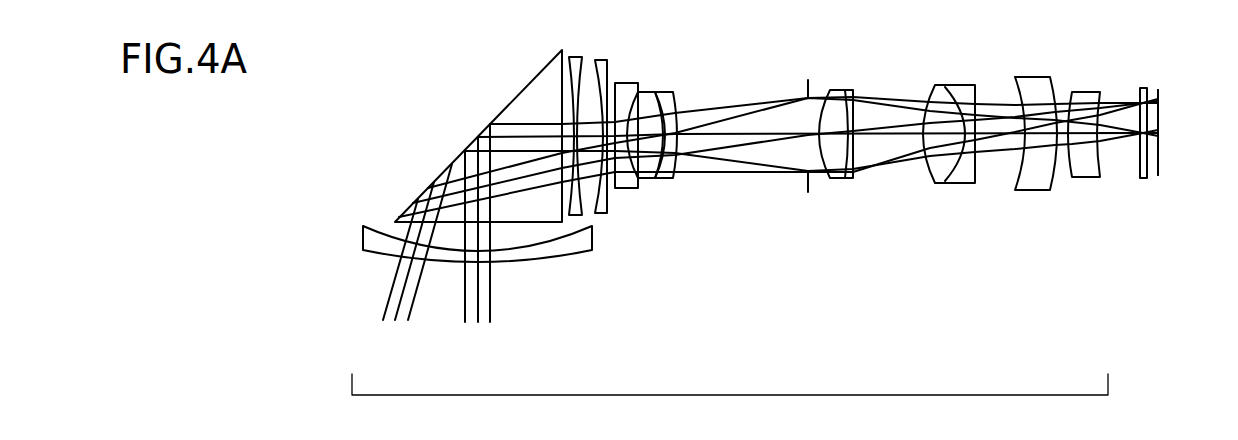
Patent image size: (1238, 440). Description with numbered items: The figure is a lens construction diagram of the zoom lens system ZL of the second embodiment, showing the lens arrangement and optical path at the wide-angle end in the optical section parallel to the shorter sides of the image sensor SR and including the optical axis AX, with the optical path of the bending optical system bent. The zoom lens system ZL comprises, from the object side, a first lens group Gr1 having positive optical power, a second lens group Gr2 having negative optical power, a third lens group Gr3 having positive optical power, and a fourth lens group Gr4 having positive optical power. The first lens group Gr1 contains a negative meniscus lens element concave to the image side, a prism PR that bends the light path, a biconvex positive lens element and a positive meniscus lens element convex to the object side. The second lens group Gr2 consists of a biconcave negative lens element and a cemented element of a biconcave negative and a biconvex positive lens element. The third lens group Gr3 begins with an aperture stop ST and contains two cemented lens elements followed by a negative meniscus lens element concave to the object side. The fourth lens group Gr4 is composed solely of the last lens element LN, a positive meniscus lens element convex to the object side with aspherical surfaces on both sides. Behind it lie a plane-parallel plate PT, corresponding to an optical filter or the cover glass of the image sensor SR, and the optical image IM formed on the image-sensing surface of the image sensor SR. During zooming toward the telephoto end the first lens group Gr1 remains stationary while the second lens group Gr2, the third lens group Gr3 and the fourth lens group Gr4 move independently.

The zoom lens system ZL is at (730, 402).
The first lens group Gr1 is at (480, 211).
The second lens group Gr2 is at (685, 225).
The third lens group Gr3 is at (1060, 226).
The fourth lens group Gr4 is at (1113, 186).
The last lens element LN is at (1084, 134).
The prism PR is at (537, 97).
The aperture stop ST is at (807, 185).
The optical axis AX is at (1118, 130).
The plane-parallel plate PT is at (1143, 179).
The image sensor SR is at (1202, 161).
The optical image IM is at (1160, 170).